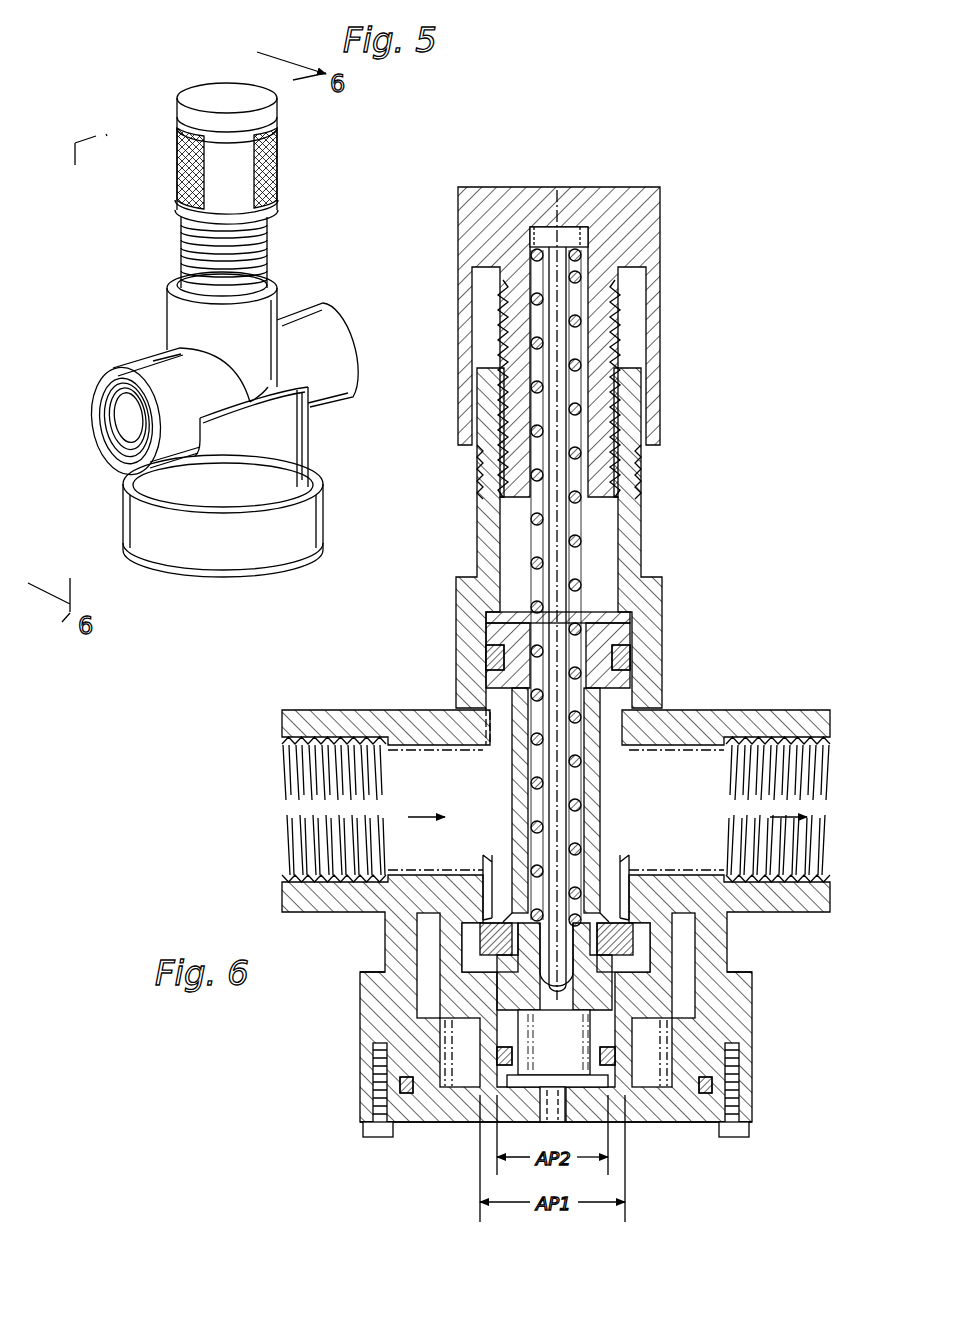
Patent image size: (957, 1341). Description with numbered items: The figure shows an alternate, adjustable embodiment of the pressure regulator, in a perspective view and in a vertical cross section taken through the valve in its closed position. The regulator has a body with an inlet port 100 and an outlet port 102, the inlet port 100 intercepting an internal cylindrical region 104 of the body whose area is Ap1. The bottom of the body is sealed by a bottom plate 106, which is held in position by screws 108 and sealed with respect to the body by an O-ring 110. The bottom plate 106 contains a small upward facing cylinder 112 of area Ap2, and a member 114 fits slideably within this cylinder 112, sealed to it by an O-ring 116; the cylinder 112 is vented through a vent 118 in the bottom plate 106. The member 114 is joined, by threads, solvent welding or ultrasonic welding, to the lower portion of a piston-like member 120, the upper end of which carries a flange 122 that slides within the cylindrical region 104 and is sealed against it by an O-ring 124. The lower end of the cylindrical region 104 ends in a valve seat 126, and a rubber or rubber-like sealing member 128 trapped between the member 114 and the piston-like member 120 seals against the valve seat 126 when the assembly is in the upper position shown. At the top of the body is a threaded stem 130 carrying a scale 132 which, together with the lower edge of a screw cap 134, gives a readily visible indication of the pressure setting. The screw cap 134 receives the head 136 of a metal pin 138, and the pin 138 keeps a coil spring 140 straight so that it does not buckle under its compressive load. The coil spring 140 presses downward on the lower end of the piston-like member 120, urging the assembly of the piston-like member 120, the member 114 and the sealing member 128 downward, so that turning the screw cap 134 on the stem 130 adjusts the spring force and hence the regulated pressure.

In FIG. 5, the inlet port 100 is at (133, 370).
In FIG. 6, the inlet port 100 is at (350, 710).
In FIG. 5, the outlet port 102 is at (323, 305).
In FIG. 6, the outlet port 102 is at (790, 710).
In FIG. 6, the internal cylindrical region 104 is at (488, 700).
In FIG. 5, the bottom plate 106 is at (208, 578).
In FIG. 6, the bottom plate 106 is at (445, 1122).
In FIG. 6, the screws 108 is at (377, 1137).
In FIG. 6, the O-ring 110 is at (400, 1085).
In FIG. 6, the upward facing cylinder 112 is at (505, 1068).
In FIG. 6, the member 114 is at (610, 992).
In FIG. 6, the O-ring 116 is at (612, 1060).
In FIG. 6, the vent 118 is at (556, 1118).
In FIG. 6, the piston-like member 120 is at (512, 805).
In FIG. 6, the flange 122 is at (630, 625).
In FIG. 6, the O-ring 124 is at (630, 660).
In FIG. 6, the valve seat 126 is at (490, 920).
In FIG. 6, the sealing member 128 is at (478, 945).
In FIG. 5, the threaded stem 130 is at (180, 255).
In FIG. 6, the threaded stem 130 is at (477, 520).
In FIG. 5, the scale 132 is at (268, 243).
In FIG. 5, the screw cap 134 is at (278, 172).
In FIG. 6, the screw cap 134 is at (662, 292).
In FIG. 6, the head 136 is at (556, 237).
In FIG. 6, the metal pin 138 is at (560, 342).
In FIG. 6, the coil spring 140 is at (581, 482).